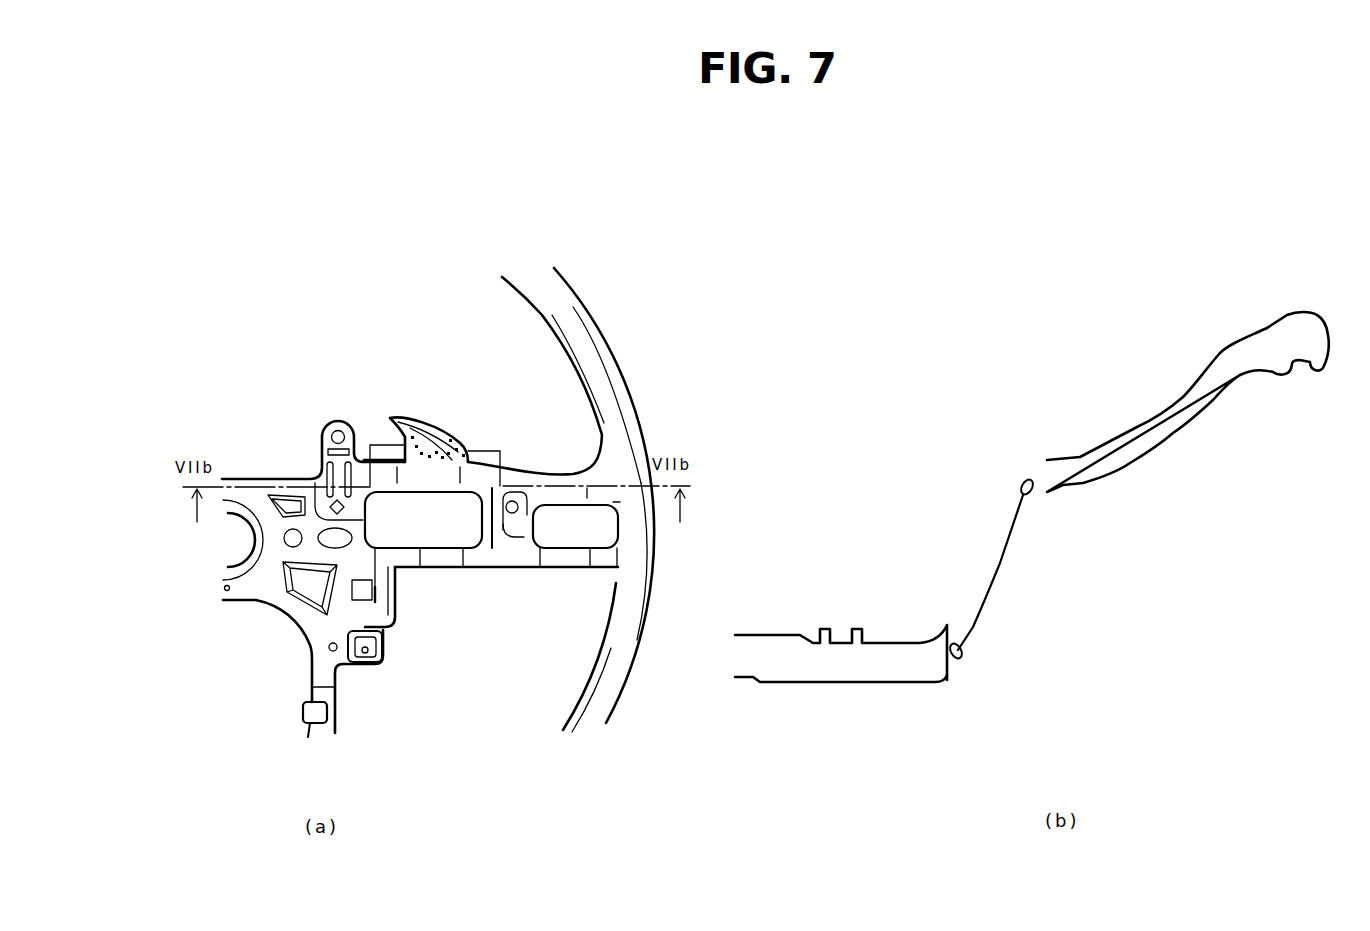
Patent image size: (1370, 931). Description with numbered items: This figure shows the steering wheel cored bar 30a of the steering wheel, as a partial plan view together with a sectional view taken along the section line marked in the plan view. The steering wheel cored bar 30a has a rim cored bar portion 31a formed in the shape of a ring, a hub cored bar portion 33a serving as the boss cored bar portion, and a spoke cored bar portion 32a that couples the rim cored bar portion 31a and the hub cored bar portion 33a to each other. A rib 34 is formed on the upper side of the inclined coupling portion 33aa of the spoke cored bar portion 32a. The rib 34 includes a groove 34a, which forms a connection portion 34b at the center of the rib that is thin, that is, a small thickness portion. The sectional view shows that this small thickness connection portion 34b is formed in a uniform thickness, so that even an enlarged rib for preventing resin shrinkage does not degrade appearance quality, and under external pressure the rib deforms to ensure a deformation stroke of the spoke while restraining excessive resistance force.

The steering wheel cored bar 30a is at (632, 298).
The rim cored bar portion 31a is at (622, 375).
The spoke cored bar portion 32a is at (573, 568).
The hub cored bar portion 33a is at (238, 600).
The inclined coupling portion 33aa is at (410, 568).
The rib 34 is at (452, 408).
The groove 34a is at (460, 440).
The connection portion 34b is at (997, 565).